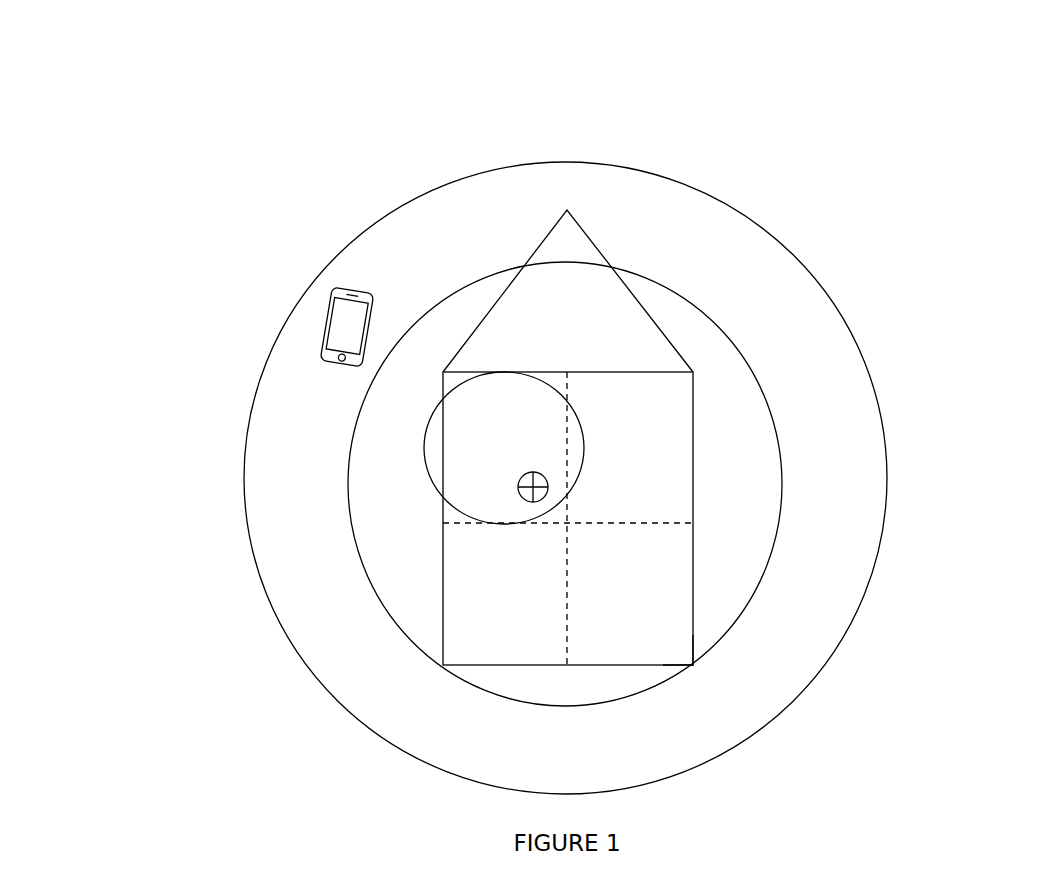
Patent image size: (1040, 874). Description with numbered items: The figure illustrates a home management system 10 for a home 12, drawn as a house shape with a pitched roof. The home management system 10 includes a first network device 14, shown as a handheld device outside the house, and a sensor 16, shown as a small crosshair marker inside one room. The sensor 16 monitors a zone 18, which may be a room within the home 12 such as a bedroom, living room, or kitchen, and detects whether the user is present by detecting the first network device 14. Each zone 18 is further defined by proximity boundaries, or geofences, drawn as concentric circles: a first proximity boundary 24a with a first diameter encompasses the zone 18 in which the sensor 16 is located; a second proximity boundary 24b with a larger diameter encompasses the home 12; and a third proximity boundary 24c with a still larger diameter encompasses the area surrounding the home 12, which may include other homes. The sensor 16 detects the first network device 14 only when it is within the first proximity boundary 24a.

The home management system 10 is at (958, 118).
The home 12 is at (693, 443).
The first network device 14 is at (363, 286).
The sensor 16 is at (520, 473).
The zone 18 is at (668, 640).
The first proximity boundary 24a is at (428, 482).
The second proximity boundary 24b is at (348, 523).
The third proximity boundary 24c is at (298, 665).